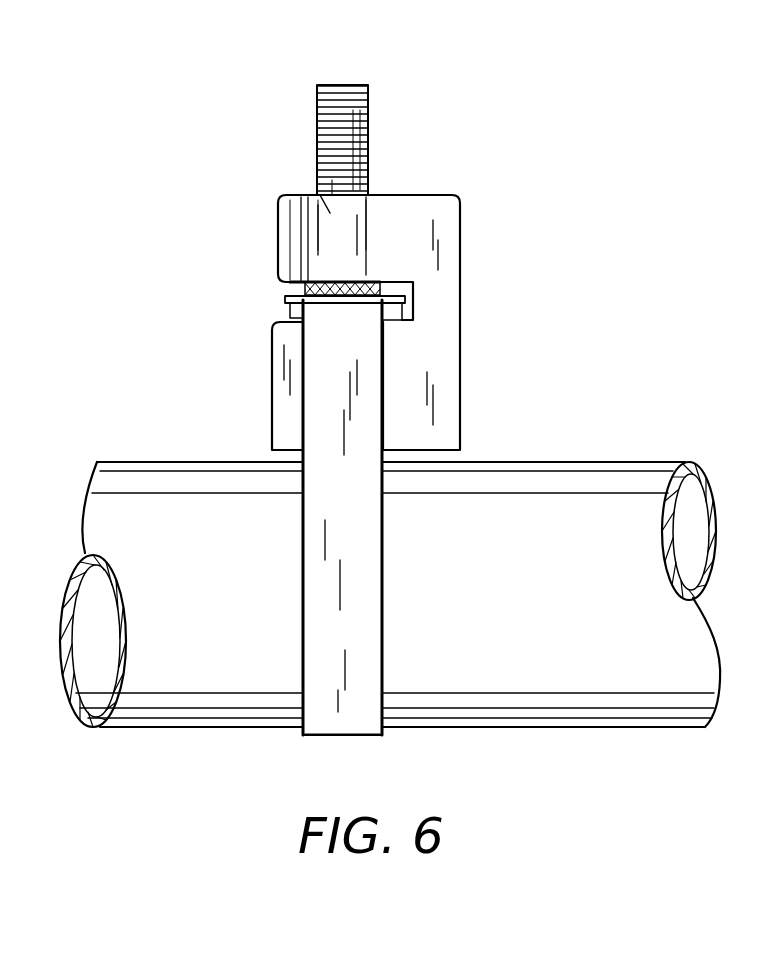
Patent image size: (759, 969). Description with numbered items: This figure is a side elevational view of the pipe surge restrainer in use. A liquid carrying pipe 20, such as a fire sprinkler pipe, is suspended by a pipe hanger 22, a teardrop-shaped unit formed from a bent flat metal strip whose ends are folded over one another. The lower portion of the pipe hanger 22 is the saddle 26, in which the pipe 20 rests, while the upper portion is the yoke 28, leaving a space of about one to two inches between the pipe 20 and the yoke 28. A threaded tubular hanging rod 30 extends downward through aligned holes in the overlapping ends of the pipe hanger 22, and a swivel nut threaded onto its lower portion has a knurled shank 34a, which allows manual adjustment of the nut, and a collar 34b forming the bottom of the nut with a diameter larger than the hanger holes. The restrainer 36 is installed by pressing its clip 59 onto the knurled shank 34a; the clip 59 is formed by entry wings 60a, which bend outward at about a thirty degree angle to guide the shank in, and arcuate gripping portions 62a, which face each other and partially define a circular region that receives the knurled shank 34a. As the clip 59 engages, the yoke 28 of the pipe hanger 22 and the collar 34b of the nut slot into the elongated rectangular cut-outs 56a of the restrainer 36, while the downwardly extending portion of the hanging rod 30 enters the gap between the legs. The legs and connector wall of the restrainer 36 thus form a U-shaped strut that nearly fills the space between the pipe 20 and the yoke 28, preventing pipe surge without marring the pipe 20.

The liquid carrying pipe 20 is at (513, 668).
The pipe hanger 22 is at (332, 620).
The saddle 26 is at (348, 736).
The yoke 28 is at (400, 300).
The hanging rod 30 is at (335, 84).
The knurled shank 34a is at (385, 283).
The collar 34b is at (388, 319).
The restrainer 36 is at (465, 208).
The elongated rectangular cut-out 56a is at (300, 283).
The clip 59 is at (343, 228).
The entry wing 60a is at (297, 220).
The arcuate gripping portion 62a is at (320, 195).